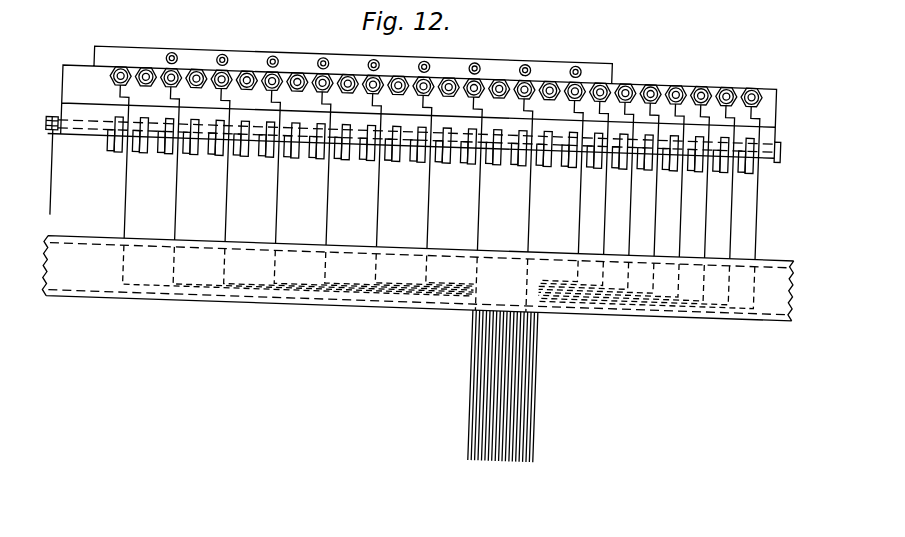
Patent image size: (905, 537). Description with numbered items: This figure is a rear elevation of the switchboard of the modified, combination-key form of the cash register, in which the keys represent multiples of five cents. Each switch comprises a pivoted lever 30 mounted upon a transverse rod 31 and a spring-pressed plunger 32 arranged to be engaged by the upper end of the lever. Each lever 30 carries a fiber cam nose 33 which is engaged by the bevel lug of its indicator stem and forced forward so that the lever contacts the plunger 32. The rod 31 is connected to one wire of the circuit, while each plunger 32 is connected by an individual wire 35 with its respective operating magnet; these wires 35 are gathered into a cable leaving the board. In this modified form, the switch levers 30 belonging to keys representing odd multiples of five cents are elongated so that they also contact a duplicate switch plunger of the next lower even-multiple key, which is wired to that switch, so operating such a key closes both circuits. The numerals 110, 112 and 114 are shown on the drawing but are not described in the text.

The terminal post 112 is at (122, 64).
The terminal 114 is at (222, 49).
The nut 110 is at (171, 83).
The transverse rod 31 is at (93, 130).
The spring-pressed plunger 32 is at (100, 191).
The pivoted lever 30 is at (170, 151).
The fiber cam nose 33 is at (315, 150).
The individual wire 35 is at (481, 362).